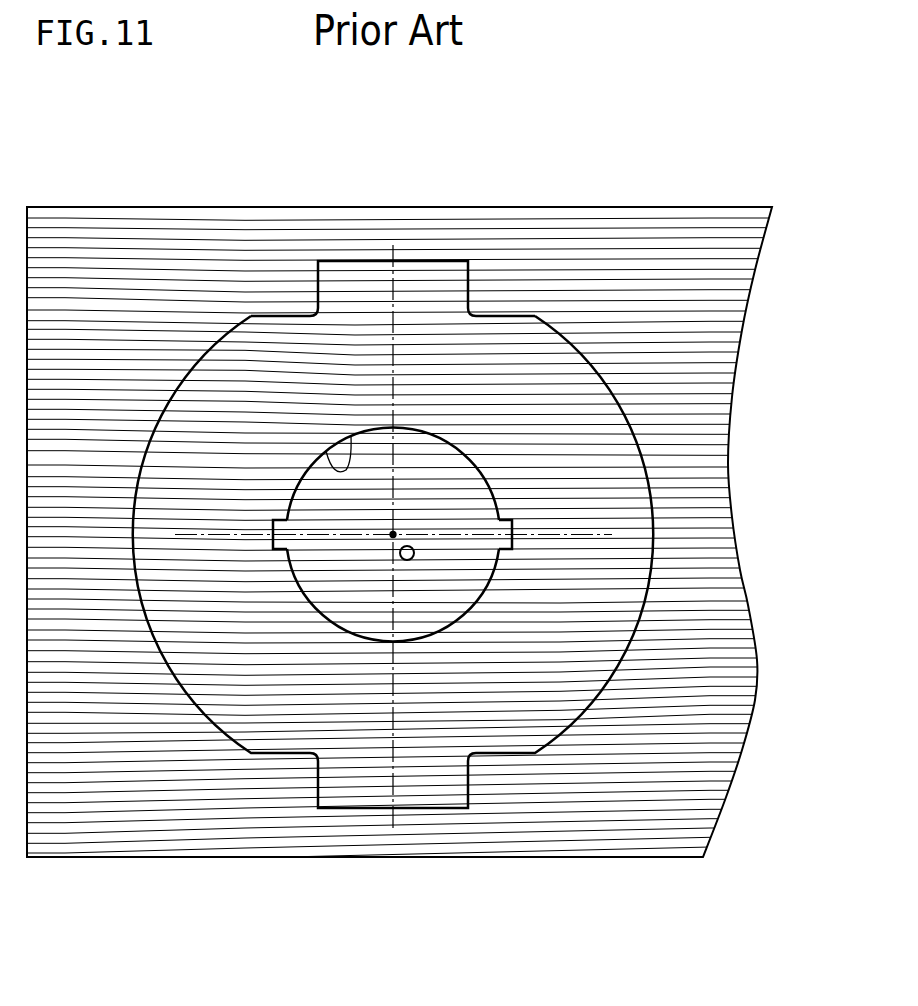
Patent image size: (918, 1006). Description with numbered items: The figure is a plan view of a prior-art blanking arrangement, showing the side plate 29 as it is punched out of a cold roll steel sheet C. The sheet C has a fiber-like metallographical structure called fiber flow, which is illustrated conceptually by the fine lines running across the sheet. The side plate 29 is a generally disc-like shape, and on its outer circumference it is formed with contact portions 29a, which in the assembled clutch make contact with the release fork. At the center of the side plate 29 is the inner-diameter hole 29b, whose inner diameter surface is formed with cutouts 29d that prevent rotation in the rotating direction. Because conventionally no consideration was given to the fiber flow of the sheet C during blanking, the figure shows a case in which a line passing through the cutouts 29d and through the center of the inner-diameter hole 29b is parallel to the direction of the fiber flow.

The side plate 29 is at (584, 357).
The contact portions 29a is at (442, 278).
The inner-diameter hole 29b is at (330, 462).
The cutouts 29d is at (508, 528).
The cold roll steel sheet C is at (313, 222).